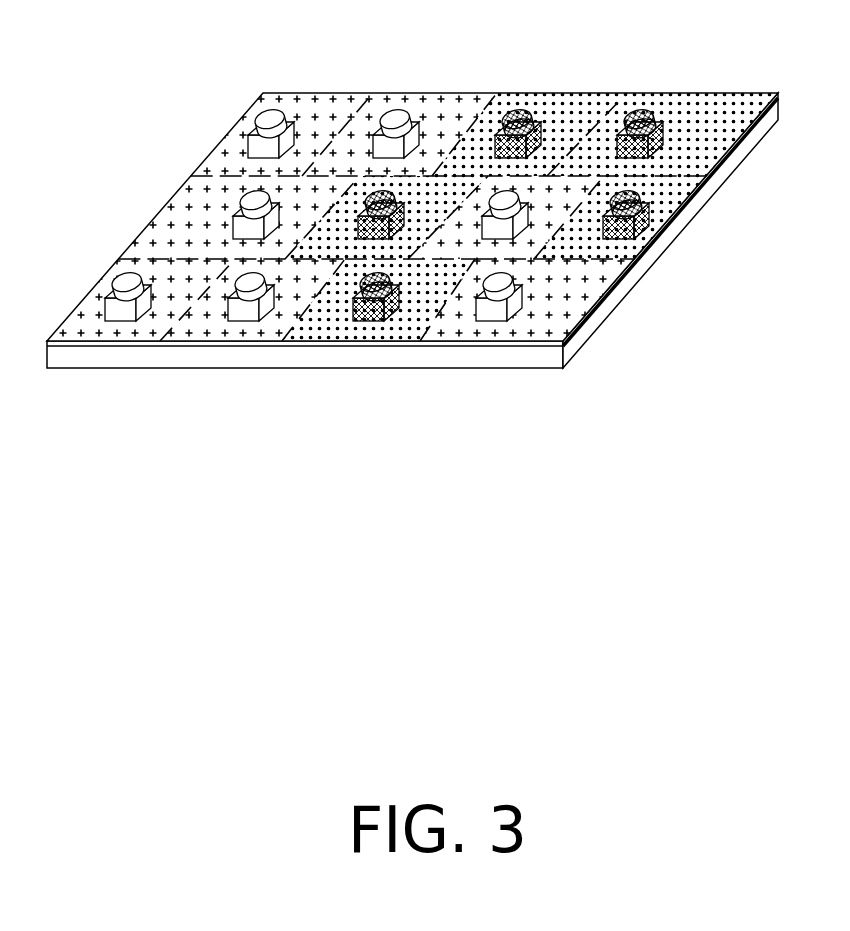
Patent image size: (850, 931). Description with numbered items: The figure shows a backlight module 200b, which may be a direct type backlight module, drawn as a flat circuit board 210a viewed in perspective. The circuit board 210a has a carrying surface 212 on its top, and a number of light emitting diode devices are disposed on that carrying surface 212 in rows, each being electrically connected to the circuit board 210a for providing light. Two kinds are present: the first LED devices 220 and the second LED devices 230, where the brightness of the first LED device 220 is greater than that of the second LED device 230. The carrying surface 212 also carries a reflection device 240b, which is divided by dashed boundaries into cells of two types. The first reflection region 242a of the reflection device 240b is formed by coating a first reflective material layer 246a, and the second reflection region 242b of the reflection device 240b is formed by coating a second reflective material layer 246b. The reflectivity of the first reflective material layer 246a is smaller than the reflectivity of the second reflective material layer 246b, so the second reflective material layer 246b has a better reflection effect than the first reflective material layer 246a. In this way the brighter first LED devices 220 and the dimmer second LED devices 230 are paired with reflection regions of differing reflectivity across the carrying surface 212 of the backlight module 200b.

The backlight module 200b is at (437, 296).
The circuit board 210a is at (677, 231).
The carrying surface 212 is at (742, 100).
The first light emitting diode device 220 is at (243, 308).
The second light emitting diode device 230 is at (365, 322).
The reflection device 240b is at (458, 418).
The first reflection region 242a is at (183, 357).
The second reflection region 242b is at (307, 357).
The first reflective material layer 246a is at (537, 322).
The second reflective material layer 246b is at (397, 328).